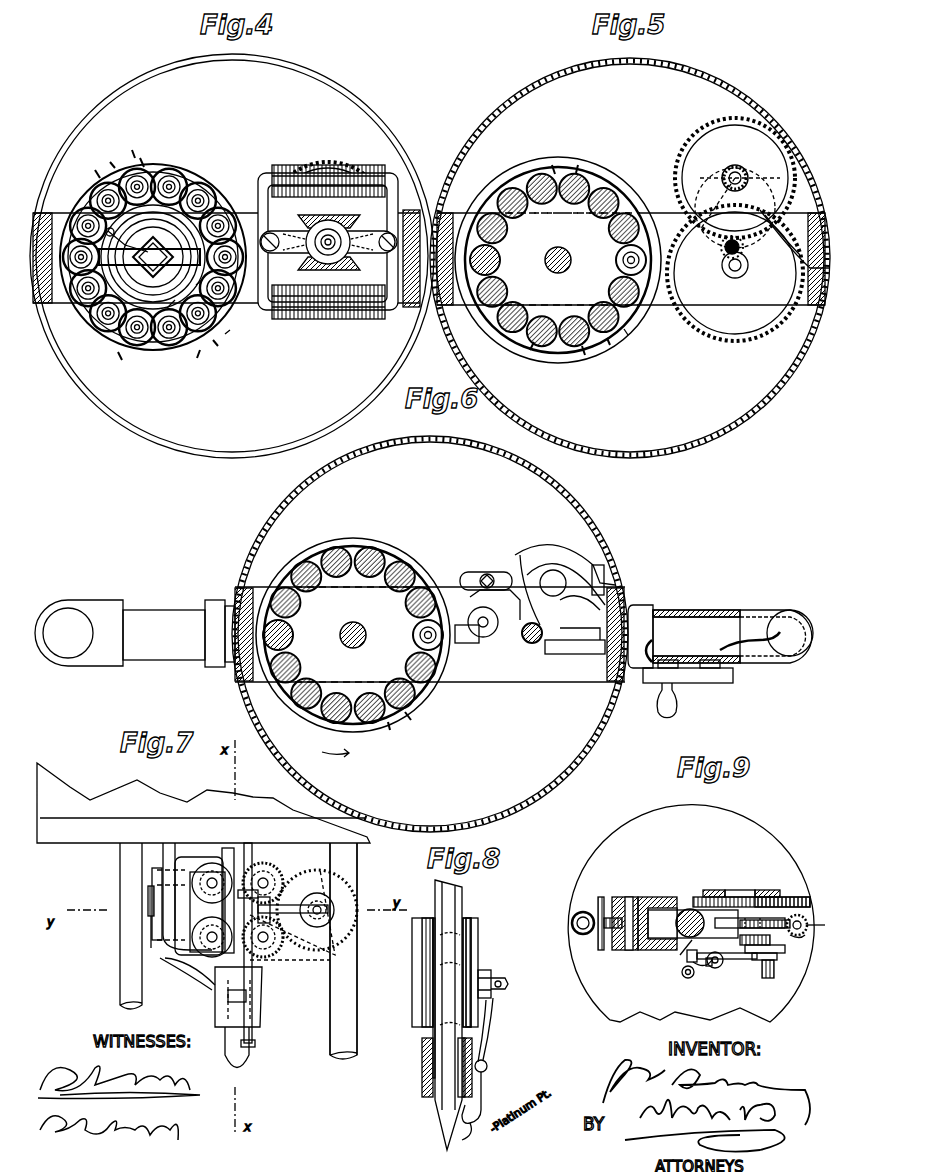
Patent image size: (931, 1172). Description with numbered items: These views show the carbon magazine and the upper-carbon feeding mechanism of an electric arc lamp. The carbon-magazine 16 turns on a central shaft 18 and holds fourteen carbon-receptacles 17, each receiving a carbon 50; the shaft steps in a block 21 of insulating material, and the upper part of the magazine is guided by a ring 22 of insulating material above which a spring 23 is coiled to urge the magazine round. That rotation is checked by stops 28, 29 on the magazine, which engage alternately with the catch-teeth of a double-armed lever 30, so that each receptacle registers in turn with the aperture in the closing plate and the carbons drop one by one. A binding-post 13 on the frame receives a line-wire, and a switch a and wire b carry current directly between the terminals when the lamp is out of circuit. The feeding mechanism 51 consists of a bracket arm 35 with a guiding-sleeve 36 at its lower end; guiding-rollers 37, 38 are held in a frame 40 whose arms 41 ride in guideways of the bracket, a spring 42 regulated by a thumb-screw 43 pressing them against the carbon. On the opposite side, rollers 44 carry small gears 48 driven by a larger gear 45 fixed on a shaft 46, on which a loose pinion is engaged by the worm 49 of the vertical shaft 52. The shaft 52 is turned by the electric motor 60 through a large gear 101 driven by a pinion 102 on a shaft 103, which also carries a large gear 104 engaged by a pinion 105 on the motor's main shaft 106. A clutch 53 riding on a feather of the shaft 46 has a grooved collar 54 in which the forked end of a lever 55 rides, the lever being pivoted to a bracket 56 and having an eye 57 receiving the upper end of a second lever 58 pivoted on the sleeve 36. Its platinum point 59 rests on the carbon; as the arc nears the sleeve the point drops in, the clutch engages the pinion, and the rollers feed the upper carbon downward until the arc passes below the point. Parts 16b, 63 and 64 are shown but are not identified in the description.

In FIG. 4, the binding-post 13 is at (127, 240).
In FIG. 4, the carbon-magazine 16 is at (180, 165).
In FIG. 5, the carbon-magazine 16 is at (600, 180).
In FIG. 6, the carbon-magazine 16 is at (400, 552).
In FIG. 4, the cylinder bar 16b is at (150, 257).
In FIG. 4, the carbon-receptacle 17 is at (168, 240).
In FIG. 5, the carbon-receptacle 17 is at (520, 240).
In FIG. 4, the central shaft 18 is at (153, 257).
In FIG. 4, the block of insulating material 21 is at (218, 309).
In FIG. 4, the ring of insulating material 22 is at (176, 303).
In FIG. 5, the ring of insulating material 22 is at (633, 340).
In FIG. 4, the spring 23 is at (95, 173).
In FIG. 4, the stop 28 is at (166, 252).
In FIG. 5, the stop 28 is at (580, 160).
In FIG. 6, the stop 28 is at (421, 717).
In FIG. 4, the stop 29 is at (159, 258).
In FIG. 5, the stop 29 is at (577, 265).
In FIG. 6, the stop 29 is at (402, 734).
In FIG. 9, the stop 29 is at (800, 942).
In FIG. 6, the double-armed lever 30 is at (478, 640).
In FIG. 9, the bracket arm 35 is at (623, 897).
In FIG. 8, the guiding-sleeve 36 is at (422, 1060).
In FIG. 7, the guiding-roller 37 is at (233, 900).
In FIG. 9, the guiding-roller 38 is at (693, 923).
In FIG. 9, the frame 40 is at (657, 900).
In FIG. 7, the arm 41 is at (196, 906).
In FIG. 9, the spring 42 is at (636, 940).
In FIG. 7, the thumb-screw 43 is at (153, 927).
In FIG. 9, the thumb-screw 43 is at (601, 950).
In FIG. 7, the feeding-roller 44 is at (280, 882).
In FIG. 8, the feeding-roller 44 is at (468, 950).
In FIG. 7, the larger gear 45 is at (303, 920).
In FIG. 9, the larger gear 45 is at (795, 897).
In FIG. 7, the shaft 46 is at (330, 905).
In FIG. 9, the shaft 46 is at (775, 890).
In FIG. 7, the small gear 48 is at (290, 962).
In FIG. 8, the small gear 48 is at (412, 955).
In FIG. 9, the small gear 48 is at (698, 897).
In FIG. 9, the worm 49 is at (752, 926).
In FIG. 8, the carbon 50 is at (454, 1067).
In FIG. 9, the carbon 50 is at (685, 955).
In FIG. 7, the feeding mechanism 51 is at (188, 969).
In FIG. 5, the vertical shaft 52 is at (737, 272).
In FIG. 6, the vertical shaft 52 is at (532, 644).
In FIG. 7, the vertical shaft 52 is at (211, 910).
In FIG. 9, the vertical shaft 52 is at (806, 923).
In FIG. 9, the clutch 53 is at (785, 950).
In FIG. 9, the grooved collar 54 is at (778, 960).
In FIG. 8, the lever 55 is at (490, 972).
In FIG. 9, the lever 55 is at (722, 966).
In FIG. 7, the bracket 56 is at (258, 1015).
In FIG. 8, the bracket 56 is at (472, 925).
In FIG. 9, the bracket 56 is at (738, 890).
In FIG. 8, the eye 57 is at (509, 984).
In FIG. 9, the eye 57 is at (705, 968).
In FIG. 7, the second lever 58 is at (213, 992).
In FIG. 8, the second lever 58 is at (488, 1060).
In FIG. 9, the second lever 58 is at (688, 977).
In FIG. 7, the platinum point 59 is at (254, 1047).
In FIG. 8, the platinum point 59 is at (472, 1109).
In FIG. 4, the electric motor 60 is at (328, 240).
In FIG. 7, the ring 63 is at (150, 940).
In FIG. 9, the ring 63 is at (583, 913).
In FIG. 7, the leg 64 is at (343, 949).
In FIG. 9, the leg 64 is at (815, 928).
In FIG. 5, the large gear 101 is at (738, 335).
In FIG. 5, the pinion 102 is at (739, 168).
In FIG. 5, the shaft 103 is at (743, 180).
In FIG. 5, the large gear 104 is at (740, 200).
In FIG. 5, the pinion 105 is at (725, 250).
In FIG. 5, the main shaft 106 is at (790, 258).
In FIG. 6, the switch a is at (698, 682).
In FIG. 6, the wire b is at (713, 645).